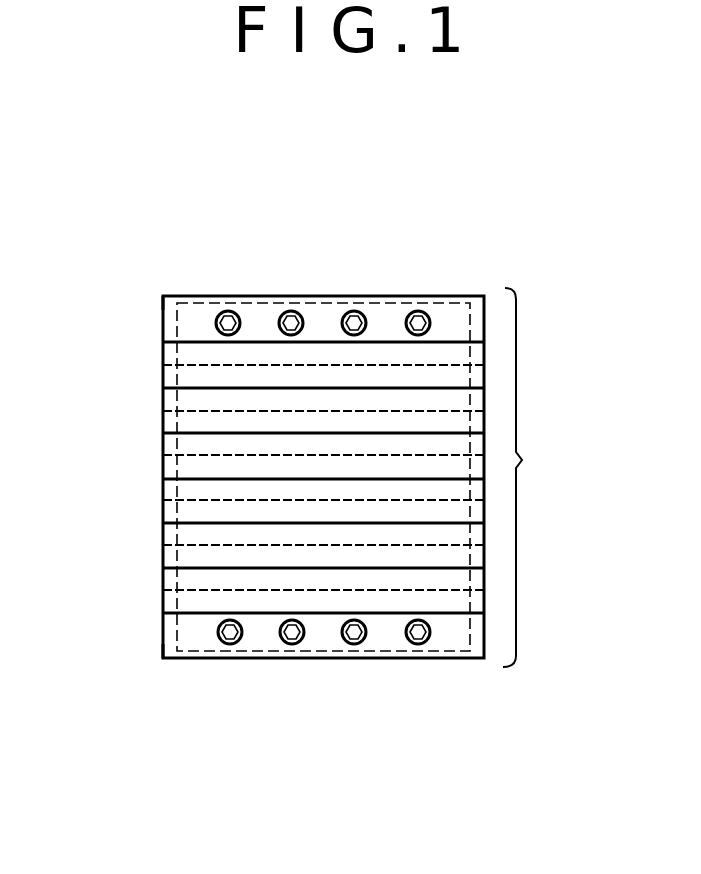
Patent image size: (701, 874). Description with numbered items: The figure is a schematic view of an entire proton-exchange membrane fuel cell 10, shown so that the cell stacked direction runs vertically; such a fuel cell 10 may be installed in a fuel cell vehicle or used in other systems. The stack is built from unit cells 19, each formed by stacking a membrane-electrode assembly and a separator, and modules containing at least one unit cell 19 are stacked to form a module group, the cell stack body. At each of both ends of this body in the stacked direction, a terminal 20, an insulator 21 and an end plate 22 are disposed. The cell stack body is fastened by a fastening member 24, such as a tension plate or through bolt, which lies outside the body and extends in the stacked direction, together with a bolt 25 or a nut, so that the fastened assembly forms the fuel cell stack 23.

The proton-exchange membrane fuel cell 10 is at (412, 296).
The unit cell 19 is at (166, 399).
The terminal 20 is at (168, 375).
The insulator 21 is at (166, 352).
The end plate 22 is at (172, 308).
The fuel cell stack 23 is at (532, 477).
The fastening member 24 is at (165, 635).
The bolt 25 is at (230, 318).